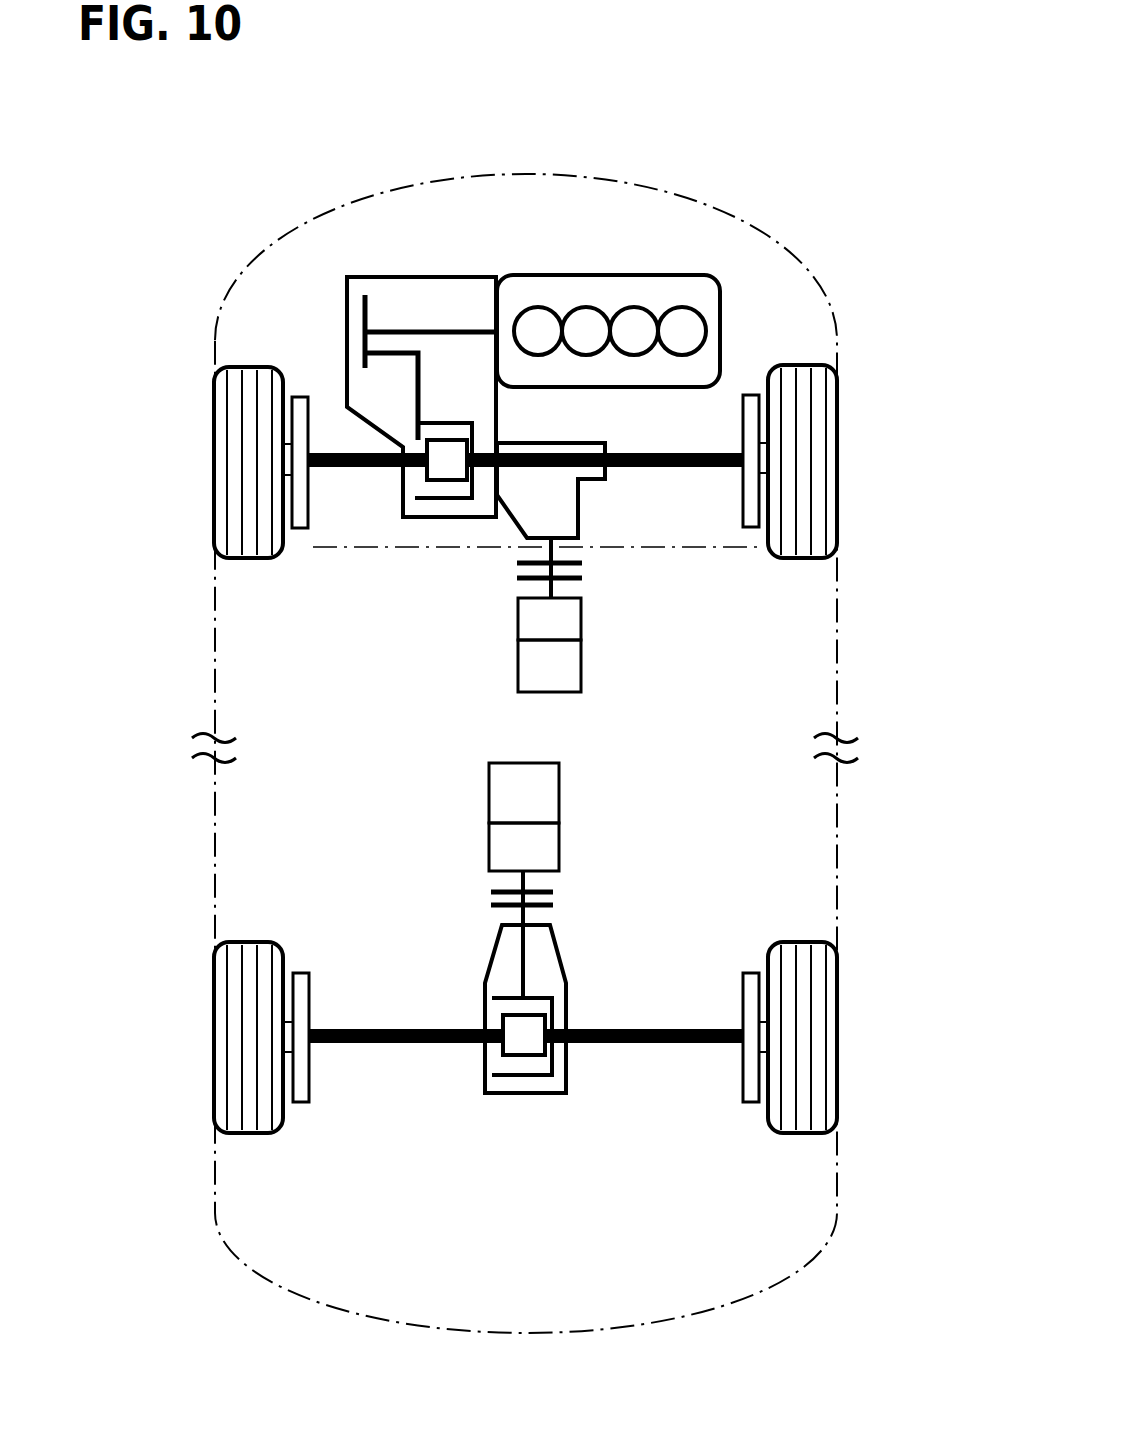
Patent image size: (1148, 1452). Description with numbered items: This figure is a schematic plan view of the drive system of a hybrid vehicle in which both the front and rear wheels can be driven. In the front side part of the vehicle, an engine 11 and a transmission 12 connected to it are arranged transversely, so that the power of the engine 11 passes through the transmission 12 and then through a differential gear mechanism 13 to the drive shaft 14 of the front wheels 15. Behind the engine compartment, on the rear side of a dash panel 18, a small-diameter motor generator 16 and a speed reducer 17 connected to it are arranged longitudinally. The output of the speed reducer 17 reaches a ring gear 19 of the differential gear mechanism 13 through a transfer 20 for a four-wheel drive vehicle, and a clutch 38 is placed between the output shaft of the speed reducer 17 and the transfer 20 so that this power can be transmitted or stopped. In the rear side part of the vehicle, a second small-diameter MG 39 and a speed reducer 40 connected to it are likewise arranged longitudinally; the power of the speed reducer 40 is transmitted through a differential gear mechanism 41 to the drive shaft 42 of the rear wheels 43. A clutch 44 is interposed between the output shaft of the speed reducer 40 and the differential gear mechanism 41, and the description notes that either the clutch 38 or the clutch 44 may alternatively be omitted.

The engine 11 is at (593, 275).
The transmission 12 is at (418, 277).
The differential gear mechanism 13 is at (447, 518).
The drive shaft 14 is at (362, 470).
The front wheels 15 is at (248, 365).
The motor generator 16 is at (581, 672).
The speed reducer 17 is at (581, 623).
The dash panel 18 is at (643, 548).
The ring gear 19 is at (440, 422).
The transfer 20 is at (582, 512).
The clutch 38 is at (575, 580).
The MG 39 is at (560, 793).
The speed reducer 40 is at (560, 842).
The differential gear mechanism 41 is at (527, 1095).
The drive shaft 42 is at (362, 1047).
The rear wheels 43 is at (248, 940).
The clutch 44 is at (546, 910).